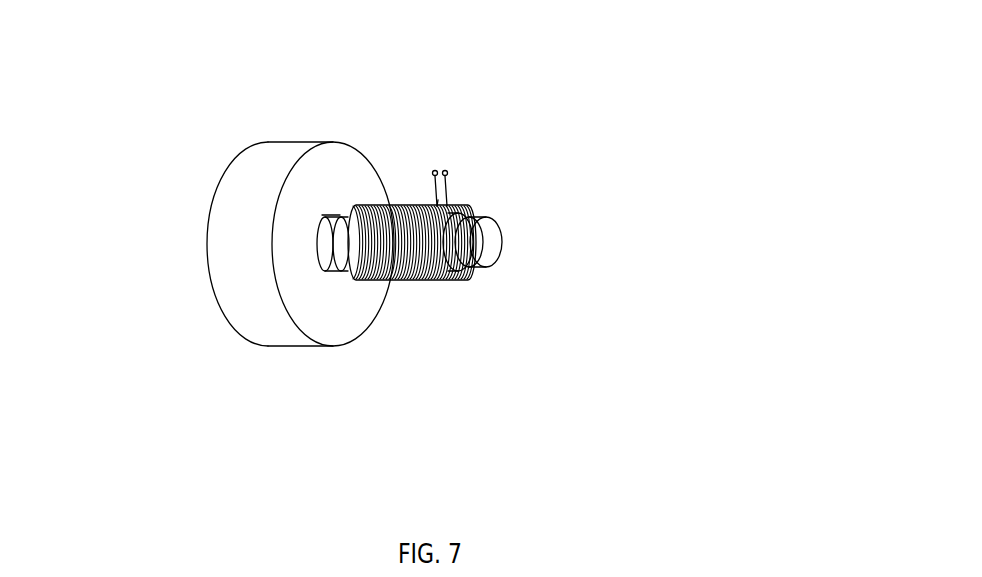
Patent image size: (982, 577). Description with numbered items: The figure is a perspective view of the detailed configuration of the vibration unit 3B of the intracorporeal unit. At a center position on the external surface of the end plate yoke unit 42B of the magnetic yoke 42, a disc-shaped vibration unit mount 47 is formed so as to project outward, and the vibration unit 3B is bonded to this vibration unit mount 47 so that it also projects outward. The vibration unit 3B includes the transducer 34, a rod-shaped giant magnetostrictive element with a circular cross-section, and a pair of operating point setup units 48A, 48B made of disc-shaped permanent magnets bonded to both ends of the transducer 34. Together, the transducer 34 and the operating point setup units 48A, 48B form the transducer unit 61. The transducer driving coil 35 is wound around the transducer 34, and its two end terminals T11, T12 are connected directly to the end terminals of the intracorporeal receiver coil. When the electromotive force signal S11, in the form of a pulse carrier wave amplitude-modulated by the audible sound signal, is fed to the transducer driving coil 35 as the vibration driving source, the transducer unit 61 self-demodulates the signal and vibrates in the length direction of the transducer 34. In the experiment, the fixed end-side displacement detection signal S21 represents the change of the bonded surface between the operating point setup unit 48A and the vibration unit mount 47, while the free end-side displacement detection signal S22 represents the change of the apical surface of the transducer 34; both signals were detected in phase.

The vibration unit 3B is at (574, 234).
The transducer 34 is at (463, 281).
The transducer driving coil 35 is at (405, 280).
The magnetic yoke 42 is at (293, 296).
The end plate yoke unit 42B is at (312, 313).
The vibration unit mount 47 is at (322, 215).
The operating point setup unit 48A is at (341, 271).
The operating point setup unit 48B is at (469, 213).
The transducer unit 61 is at (590, 263).
The electromotive force signal S11 is at (438, 200).
The fixed end-side displacement detection signal S21 is at (320, 234).
The free end-side displacement detection signal S22 is at (501, 231).
The end terminal T11 is at (435, 170).
The end terminal T12 is at (445, 170).